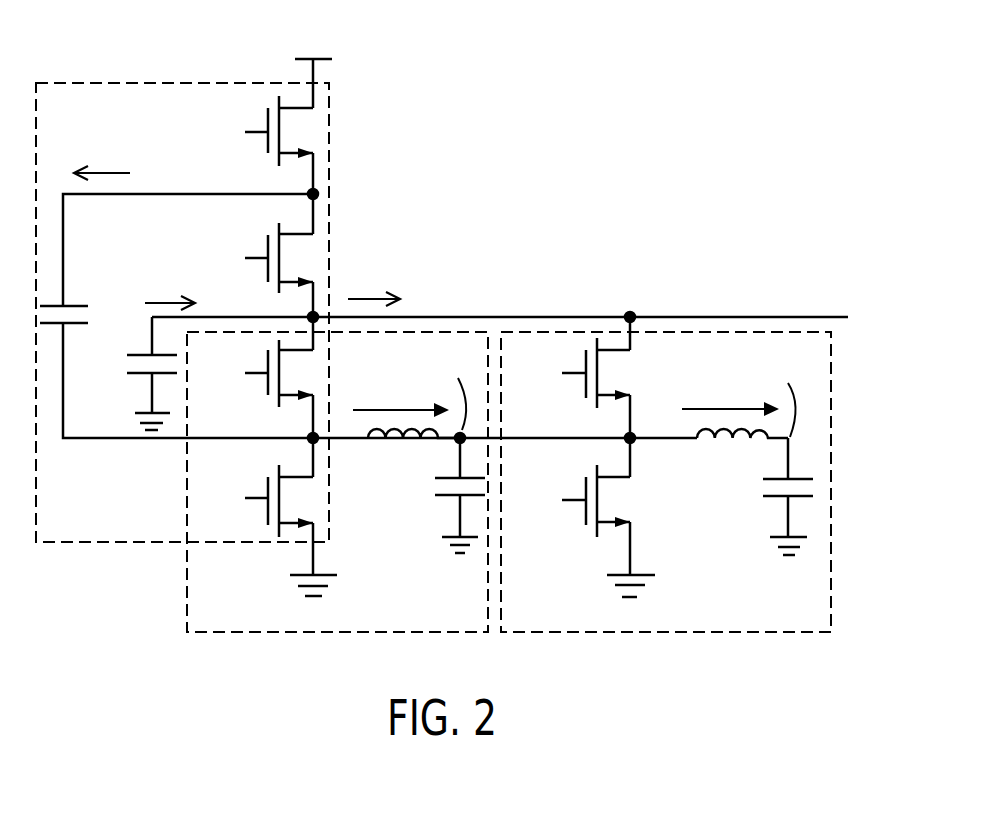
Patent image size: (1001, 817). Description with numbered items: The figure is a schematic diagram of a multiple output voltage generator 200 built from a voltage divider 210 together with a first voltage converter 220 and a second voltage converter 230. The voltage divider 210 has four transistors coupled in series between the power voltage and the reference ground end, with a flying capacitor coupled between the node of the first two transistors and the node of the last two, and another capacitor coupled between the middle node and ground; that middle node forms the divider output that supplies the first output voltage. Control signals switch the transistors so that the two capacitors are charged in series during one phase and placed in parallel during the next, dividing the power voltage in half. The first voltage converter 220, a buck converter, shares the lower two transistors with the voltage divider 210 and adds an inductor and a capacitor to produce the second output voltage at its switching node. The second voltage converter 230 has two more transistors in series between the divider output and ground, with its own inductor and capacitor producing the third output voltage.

The multiple output voltage generator 200 is at (906, 675).
The voltage divider 210 is at (140, 82).
The first voltage converter 220 is at (402, 632).
The second voltage converter 230 is at (718, 632).